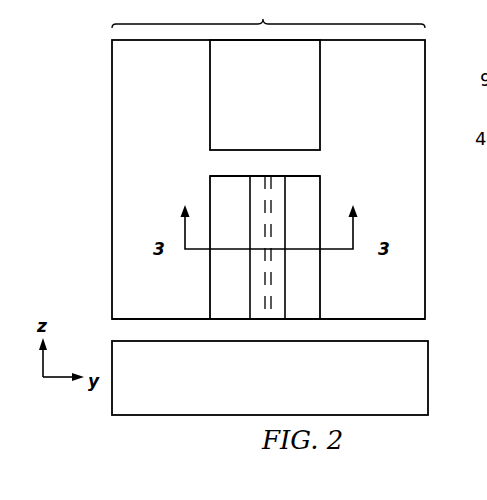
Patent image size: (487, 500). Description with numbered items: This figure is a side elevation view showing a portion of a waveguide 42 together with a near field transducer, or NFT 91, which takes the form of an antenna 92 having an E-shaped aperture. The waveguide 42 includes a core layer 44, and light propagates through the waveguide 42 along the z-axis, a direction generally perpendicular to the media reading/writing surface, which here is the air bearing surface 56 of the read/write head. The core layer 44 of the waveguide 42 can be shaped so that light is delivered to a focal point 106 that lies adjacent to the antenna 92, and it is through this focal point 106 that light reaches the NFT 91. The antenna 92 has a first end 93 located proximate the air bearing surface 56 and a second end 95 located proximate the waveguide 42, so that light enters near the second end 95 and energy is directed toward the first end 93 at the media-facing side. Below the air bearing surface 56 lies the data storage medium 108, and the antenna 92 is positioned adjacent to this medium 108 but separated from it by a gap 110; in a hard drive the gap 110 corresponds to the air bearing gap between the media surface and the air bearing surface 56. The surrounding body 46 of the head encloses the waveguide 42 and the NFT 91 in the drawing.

The waveguide 42 is at (268, 14).
The main pole body / yoke 46 is at (133, 110).
The core layer 44 is at (307, 95).
The antenna 92 is at (318, 202).
The second end 95 is at (308, 180).
The first end 93 is at (295, 312).
The focal point 106 is at (302, 165).
The near field transducer (NFT) 91 is at (196, 165).
The air bearing surface (ABS) 56 is at (350, 319).
The gap 110 is at (417, 330).
The data storage medium 108 is at (418, 368).